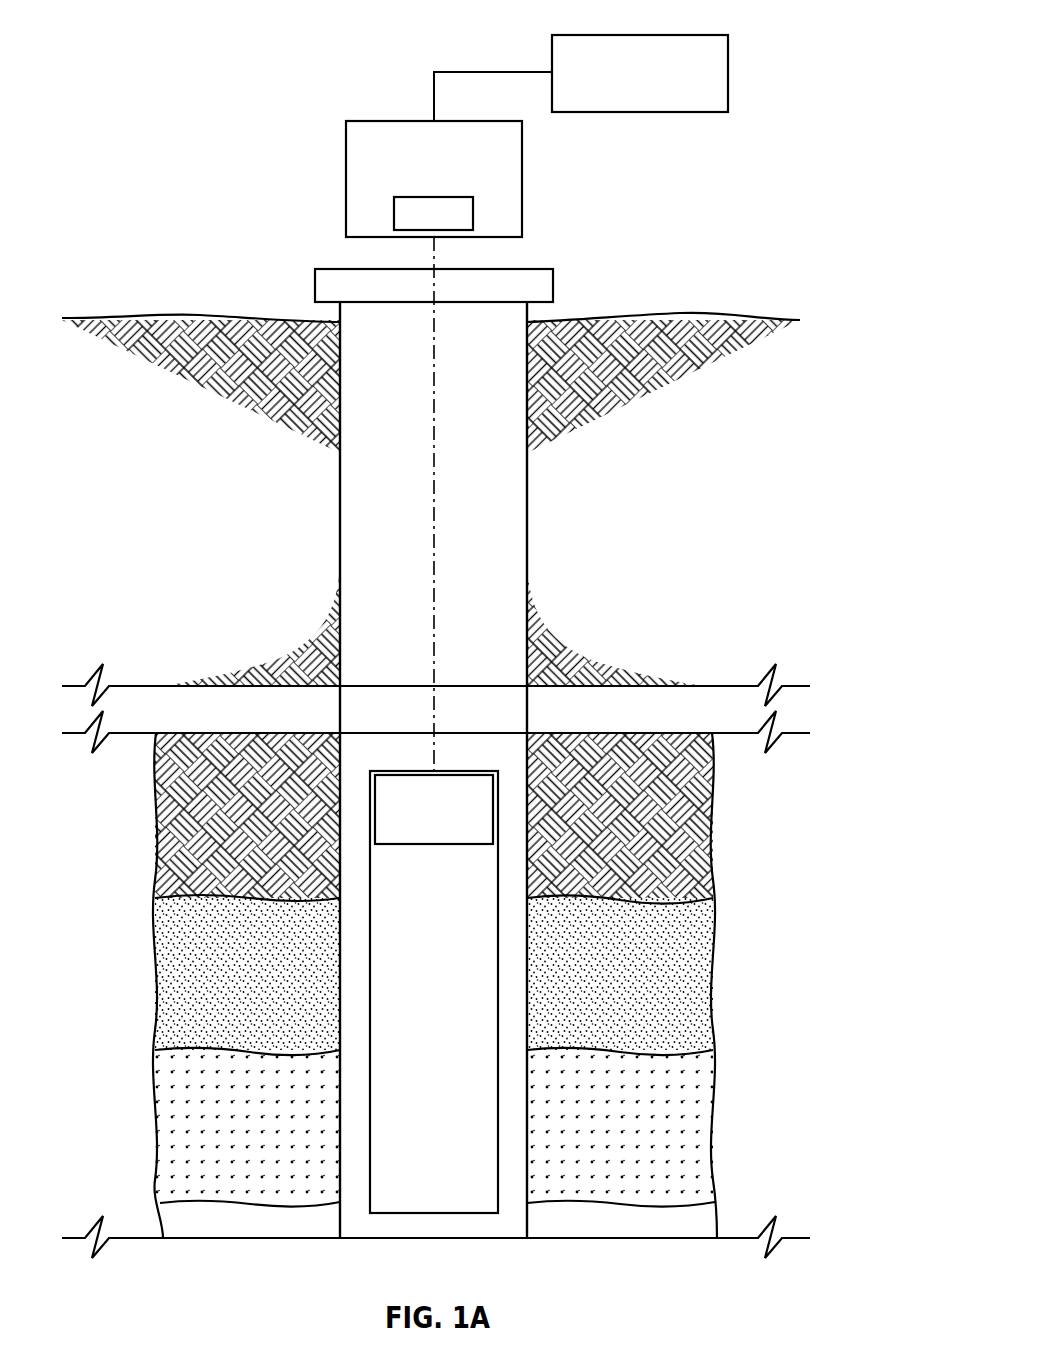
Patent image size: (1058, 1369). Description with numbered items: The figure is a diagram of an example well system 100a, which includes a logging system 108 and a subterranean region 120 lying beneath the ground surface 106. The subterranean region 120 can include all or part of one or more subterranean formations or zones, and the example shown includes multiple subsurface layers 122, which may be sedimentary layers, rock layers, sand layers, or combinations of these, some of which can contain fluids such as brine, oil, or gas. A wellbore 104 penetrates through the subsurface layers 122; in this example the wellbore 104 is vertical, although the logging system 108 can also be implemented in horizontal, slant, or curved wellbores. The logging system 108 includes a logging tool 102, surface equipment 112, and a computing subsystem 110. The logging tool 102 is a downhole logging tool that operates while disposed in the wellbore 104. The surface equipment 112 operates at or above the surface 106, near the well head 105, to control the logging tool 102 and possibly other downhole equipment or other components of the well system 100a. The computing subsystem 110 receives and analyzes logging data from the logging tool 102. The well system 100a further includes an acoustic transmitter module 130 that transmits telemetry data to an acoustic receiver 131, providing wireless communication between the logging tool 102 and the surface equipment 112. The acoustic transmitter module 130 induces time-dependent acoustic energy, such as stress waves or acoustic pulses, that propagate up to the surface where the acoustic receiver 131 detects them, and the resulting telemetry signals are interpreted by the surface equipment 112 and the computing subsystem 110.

The well system 100a is at (213, 92).
The logging tool 102 is at (457, 1004).
The wellbore 104 is at (340, 535).
The well head 105 is at (315, 283).
The ground surface 106 is at (690, 318).
The logging system 108 is at (733, 180).
The computing subsystem 110 is at (618, 35).
The surface equipment 112 is at (412, 121).
The subterranean region 120 is at (140, 984).
The subsurface layers 122 is at (718, 818).
The acoustic transmitter module 130 is at (457, 821).
The acoustic receiver 131 is at (455, 226).